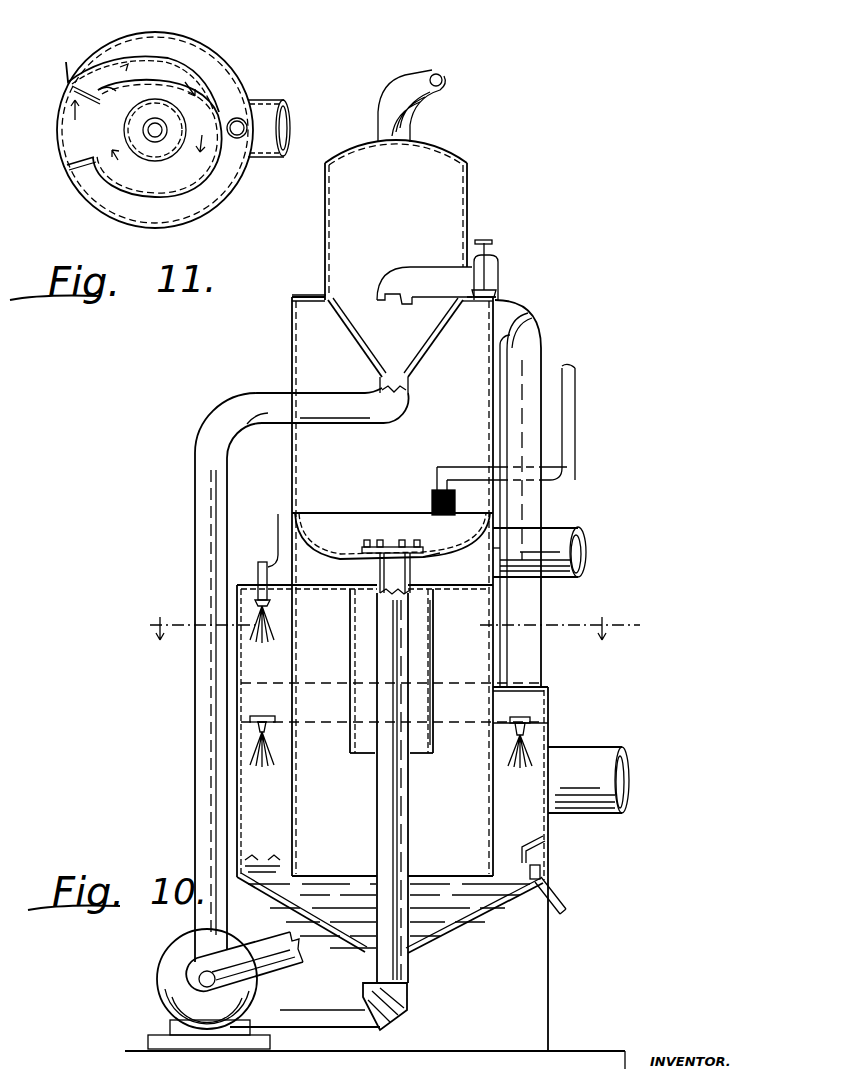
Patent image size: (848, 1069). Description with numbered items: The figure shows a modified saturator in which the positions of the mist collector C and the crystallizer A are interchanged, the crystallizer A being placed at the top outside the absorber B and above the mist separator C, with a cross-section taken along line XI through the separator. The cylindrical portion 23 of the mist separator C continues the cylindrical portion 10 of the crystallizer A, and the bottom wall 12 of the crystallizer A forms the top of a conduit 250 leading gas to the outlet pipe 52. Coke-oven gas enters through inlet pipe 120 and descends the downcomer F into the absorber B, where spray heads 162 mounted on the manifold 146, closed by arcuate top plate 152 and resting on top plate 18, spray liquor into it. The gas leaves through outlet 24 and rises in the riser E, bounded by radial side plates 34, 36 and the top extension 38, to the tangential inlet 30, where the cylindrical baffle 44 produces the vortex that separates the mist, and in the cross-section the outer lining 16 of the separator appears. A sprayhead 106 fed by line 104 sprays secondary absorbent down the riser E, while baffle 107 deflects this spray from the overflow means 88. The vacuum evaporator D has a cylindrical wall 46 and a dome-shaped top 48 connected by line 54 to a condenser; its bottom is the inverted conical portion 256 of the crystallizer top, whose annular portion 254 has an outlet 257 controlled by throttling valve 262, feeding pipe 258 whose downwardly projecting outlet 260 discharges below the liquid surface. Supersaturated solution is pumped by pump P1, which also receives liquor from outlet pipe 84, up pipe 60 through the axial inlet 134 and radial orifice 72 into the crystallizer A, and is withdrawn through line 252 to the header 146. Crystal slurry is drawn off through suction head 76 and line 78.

In FIG. 10, the cylindrical portion 10 is at (290, 322).
In FIG. 10, the bottom wall 12 is at (330, 548).
In FIG. 11, the rotor housing 16 is at (156, 32).
In FIG. 10, the top plate 18 is at (193, 507).
In FIG. 10, the cylindrical portion 23 is at (287, 820).
In FIG. 11, the outlet 24 is at (197, 77).
In FIG. 10, the outlet 24 is at (431, 553).
In FIG. 11, the tangential inlet 30 is at (118, 76).
In FIG. 10, the tangential inlet 30 is at (292, 680).
In FIG. 11, the radial side plate 34 is at (73, 68).
In FIG. 11, the radial side plate 36 is at (82, 168).
In FIG. 10, the extension of the top 38 is at (420, 594).
In FIG. 11, the cylindrical member 44 is at (184, 134).
In FIG. 10, the cylindrical member 44 is at (436, 658).
In FIG. 10, the cylindrical member 46 is at (470, 210).
In FIG. 10, the top plate 48 is at (447, 153).
In FIG. 11, the outlet 52 is at (270, 113).
In FIG. 10, the outlet 52 is at (566, 536).
In FIG. 10, the line 54 is at (418, 78).
In FIG. 11, the pipe 60 is at (157, 135).
In FIG. 10, the pipe 60 is at (398, 824).
In FIG. 10, the radial orifice 72 is at (393, 548).
In FIG. 10, the suction head 76 is at (430, 497).
In FIG. 10, the line 78 is at (575, 408).
In FIG. 10, the outlet pipe 84 is at (303, 958).
In FIG. 10, the overflow means 88 is at (548, 872).
In FIG. 10, the line 104 is at (266, 531).
In FIG. 10, the sprayhead 106 is at (258, 565).
In FIG. 10, the baffle 107 is at (534, 840).
In FIG. 10, the inlet pipe 120 is at (608, 757).
In FIG. 10, the axial inlet 134 is at (379, 566).
In FIG. 10, the manifold 146 is at (538, 703).
In FIG. 11, the arcuate top plate 152 is at (214, 204).
In FIG. 10, the spray heads 162 is at (267, 732).
In FIG. 10, the conduit 250 is at (482, 557).
In FIG. 11, the line 252 is at (246, 116).
In FIG. 10, the line 252 is at (540, 337).
In FIG. 10, the annular portion 254 is at (291, 297).
In FIG. 10, the inverted conical portion 256 is at (358, 340).
In FIG. 10, the outlet 257 is at (478, 302).
In FIG. 10, the pipe 258 is at (416, 270).
In FIG. 10, the outlet 260 is at (402, 305).
In FIG. 10, the throttling valve 262 is at (490, 274).
In FIG. 10, the crystallizer A is at (290, 352).
In FIG. 10, the absorber B is at (552, 834).
In FIG. 10, the mist separator C is at (497, 791).
In FIG. 10, the vacuum evaporator D is at (468, 187).
In FIG. 11, the riser E is at (58, 133).
In FIG. 10, the riser E is at (240, 665).
In FIG. 10, the downcomer F is at (392, 702).
In FIG. 10, the pump P1 is at (163, 955).
In FIG. 10, the section line XI is at (393, 619).